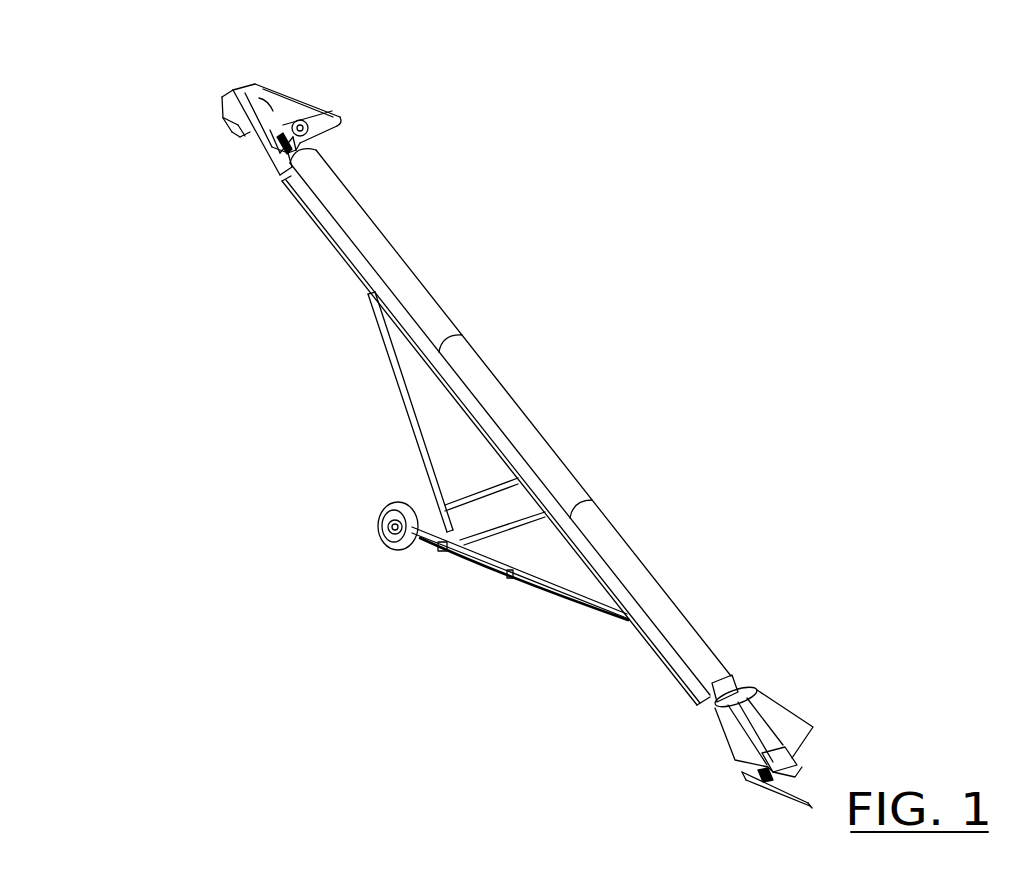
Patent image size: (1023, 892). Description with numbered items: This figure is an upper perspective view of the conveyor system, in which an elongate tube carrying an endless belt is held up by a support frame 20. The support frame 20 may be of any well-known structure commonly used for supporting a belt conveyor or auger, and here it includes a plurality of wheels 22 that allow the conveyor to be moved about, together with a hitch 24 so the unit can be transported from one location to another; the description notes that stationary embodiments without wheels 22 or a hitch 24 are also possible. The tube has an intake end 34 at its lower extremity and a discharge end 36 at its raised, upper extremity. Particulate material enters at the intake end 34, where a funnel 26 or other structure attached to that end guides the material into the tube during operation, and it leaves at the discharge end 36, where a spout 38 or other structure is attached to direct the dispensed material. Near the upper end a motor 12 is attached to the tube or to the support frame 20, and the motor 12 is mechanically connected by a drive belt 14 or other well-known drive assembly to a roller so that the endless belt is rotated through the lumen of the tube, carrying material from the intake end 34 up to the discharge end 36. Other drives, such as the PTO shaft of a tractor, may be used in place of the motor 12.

The motor 12 is at (290, 162).
The drive belt 14 is at (303, 93).
The support frame 20 is at (407, 423).
The wheels 22 is at (378, 524).
The hitch 24 is at (805, 793).
The funnel 26 is at (738, 735).
The intake end 34 is at (760, 693).
The discharge end 36 is at (273, 111).
The spout 38 is at (227, 124).